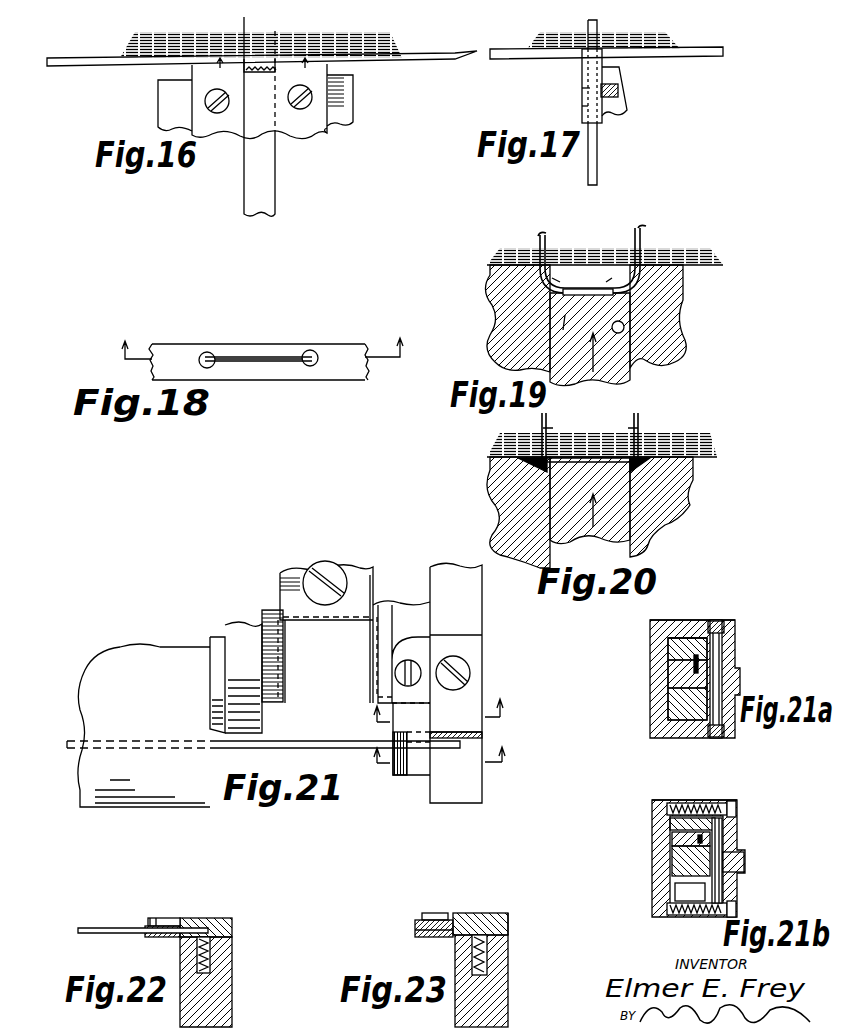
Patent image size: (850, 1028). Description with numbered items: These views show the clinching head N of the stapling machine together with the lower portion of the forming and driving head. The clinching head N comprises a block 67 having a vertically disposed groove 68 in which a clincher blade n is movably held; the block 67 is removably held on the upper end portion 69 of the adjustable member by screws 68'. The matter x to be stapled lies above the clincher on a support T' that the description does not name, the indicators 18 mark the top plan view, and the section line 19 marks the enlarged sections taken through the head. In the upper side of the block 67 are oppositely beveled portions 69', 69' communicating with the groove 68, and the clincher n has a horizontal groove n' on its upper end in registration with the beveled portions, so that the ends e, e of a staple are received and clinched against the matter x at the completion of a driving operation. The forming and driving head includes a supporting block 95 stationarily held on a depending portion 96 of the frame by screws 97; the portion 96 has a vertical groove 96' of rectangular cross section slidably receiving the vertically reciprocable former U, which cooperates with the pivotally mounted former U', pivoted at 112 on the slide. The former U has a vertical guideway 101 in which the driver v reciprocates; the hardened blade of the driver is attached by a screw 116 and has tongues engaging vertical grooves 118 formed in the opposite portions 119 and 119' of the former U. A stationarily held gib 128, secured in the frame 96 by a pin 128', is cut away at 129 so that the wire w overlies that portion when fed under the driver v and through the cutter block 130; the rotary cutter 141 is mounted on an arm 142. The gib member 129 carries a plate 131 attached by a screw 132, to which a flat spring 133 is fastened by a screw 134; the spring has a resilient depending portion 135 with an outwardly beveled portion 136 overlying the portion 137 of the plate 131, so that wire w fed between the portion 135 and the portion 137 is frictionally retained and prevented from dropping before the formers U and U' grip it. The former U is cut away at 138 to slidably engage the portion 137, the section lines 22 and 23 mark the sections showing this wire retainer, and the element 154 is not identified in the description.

In FIG. 16, the matter x is at (201, 36).
In FIG. 17, the matter x is at (656, 45).
In FIG. 20, the matter x is at (594, 444).
In FIG. 16, the plate T' is at (262, 72).
In FIG. 17, the plate T' is at (606, 64).
In FIG. 16, the section line 18 is at (269, 70).
In FIG. 16, the staple ends e is at (269, 63).
In FIG. 19, the staple ends e is at (582, 278).
In FIG. 20, the staple ends e is at (590, 429).
In FIG. 16, the screws 68' is at (217, 105).
In FIG. 17, the screws 68' is at (565, 91).
In FIG. 16, the clinching head N is at (276, 112).
In FIG. 17, the clinching head N is at (576, 75).
In FIG. 16, the upper end portion 69 is at (359, 97).
In FIG. 17, the upper end portion 69 is at (634, 89).
In FIG. 20, the upper end portion 69 is at (559, 474).
In FIG. 16, the block 67 is at (330, 131).
In FIG. 17, the block 67 is at (582, 108).
In FIG. 18, the block 67 is at (285, 369).
In FIG. 19, the block 67 is at (676, 300).
In FIG. 20, the block 67 is at (676, 490).
In FIG. 16, the clincher blade n is at (273, 116).
In FIG. 17, the clincher blade n is at (605, 102).
In FIG. 18, the clincher blade n is at (259, 383).
In FIG. 19, the clincher blade n is at (629, 339).
In FIG. 20, the clincher blade n is at (623, 500).
In FIG. 18, the section line 19 is at (262, 348).
In FIG. 18, the beveled portions 69' is at (265, 341).
In FIG. 19, the beveled portions 69' is at (592, 258).
In FIG. 20, the beveled portions 69' is at (637, 446).
In FIG. 18, the groove 68 is at (258, 340).
In FIG. 19, the groove 68 is at (664, 323).
In FIG. 19, the horizontal groove n' is at (588, 285).
In FIG. 21, the cutter block 130 is at (165, 722).
In FIG. 21, the wire w is at (320, 741).
In FIG. 22, the wire w is at (100, 927).
In FIG. 21, the rotary cutter 141 is at (222, 668).
In FIG. 21, the arm 142 is at (250, 686).
In FIG. 21, the forming element U is at (253, 652).
In FIG. 21A, the forming element U is at (662, 666).
In FIG. 21B, the forming element U is at (661, 842).
In FIG. 21, the forming element U' is at (264, 586).
In FIG. 21A, the forming element U' is at (658, 680).
In FIG. 21B, the forming element U' is at (691, 847).
In FIG. 21, the vertical guideway 101 is at (368, 637).
In FIG. 21, the screw 116 is at (364, 562).
In FIG. 21, the vertical grooves 118 is at (372, 657).
In FIG. 21, the portion 119 is at (307, 672).
In FIG. 21, the portion 119' is at (354, 657).
In FIG. 21, the cut-away portion 138 is at (403, 615).
In FIG. 21, the gib 128 is at (476, 683).
In FIG. 21A, the gib 128 is at (695, 616).
In FIG. 21B, the gib 128 is at (694, 795).
In FIG. 22, the gib 128 is at (224, 982).
In FIG. 23, the gib 128 is at (503, 981).
In FIG. 21, the screw 134 is at (416, 668).
In FIG. 22, the screw 134 is at (172, 923).
In FIG. 23, the screw 134 is at (443, 913).
In FIG. 21, the screw 132 is at (467, 668).
In FIG. 22, the screw 132 is at (232, 943).
In FIG. 23, the screw 132 is at (483, 913).
In FIG. 21, the plate 131 is at (470, 690).
In FIG. 22, the plate 131 is at (166, 938).
In FIG. 23, the plate 131 is at (513, 922).
In FIG. 21, the flat spring 133 is at (410, 718).
In FIG. 23, the flat spring 133 is at (420, 921).
In FIG. 21, the beveled portion 136 is at (395, 778).
In FIG. 22, the beveled portion 136 is at (156, 919).
In FIG. 21, the depending portion 135 is at (416, 777).
In FIG. 21, the cut-away portion 129 is at (458, 780).
In FIG. 21, the section line 23 is at (434, 716).
In FIG. 21, the section line 22 is at (435, 763).
In FIG. 21A, the depending portion 96 is at (678, 679).
In FIG. 21B, the depending portion 96 is at (678, 858).
In FIG. 21A, the vertical groove 96' is at (686, 619).
In FIG. 21A, the driver v is at (676, 687).
In FIG. 21A, the pivot 112 is at (721, 656).
In FIG. 21A, the supporting block 95 is at (725, 631).
In FIG. 21B, the supporting block 95 is at (736, 822).
In FIG. 21B, the screws 97 is at (736, 805).
In FIG. 21B, the pin 128' is at (663, 808).
In FIG. 21B, the recess 154 is at (672, 892).
In FIG. 23, the portion 137 is at (415, 935).